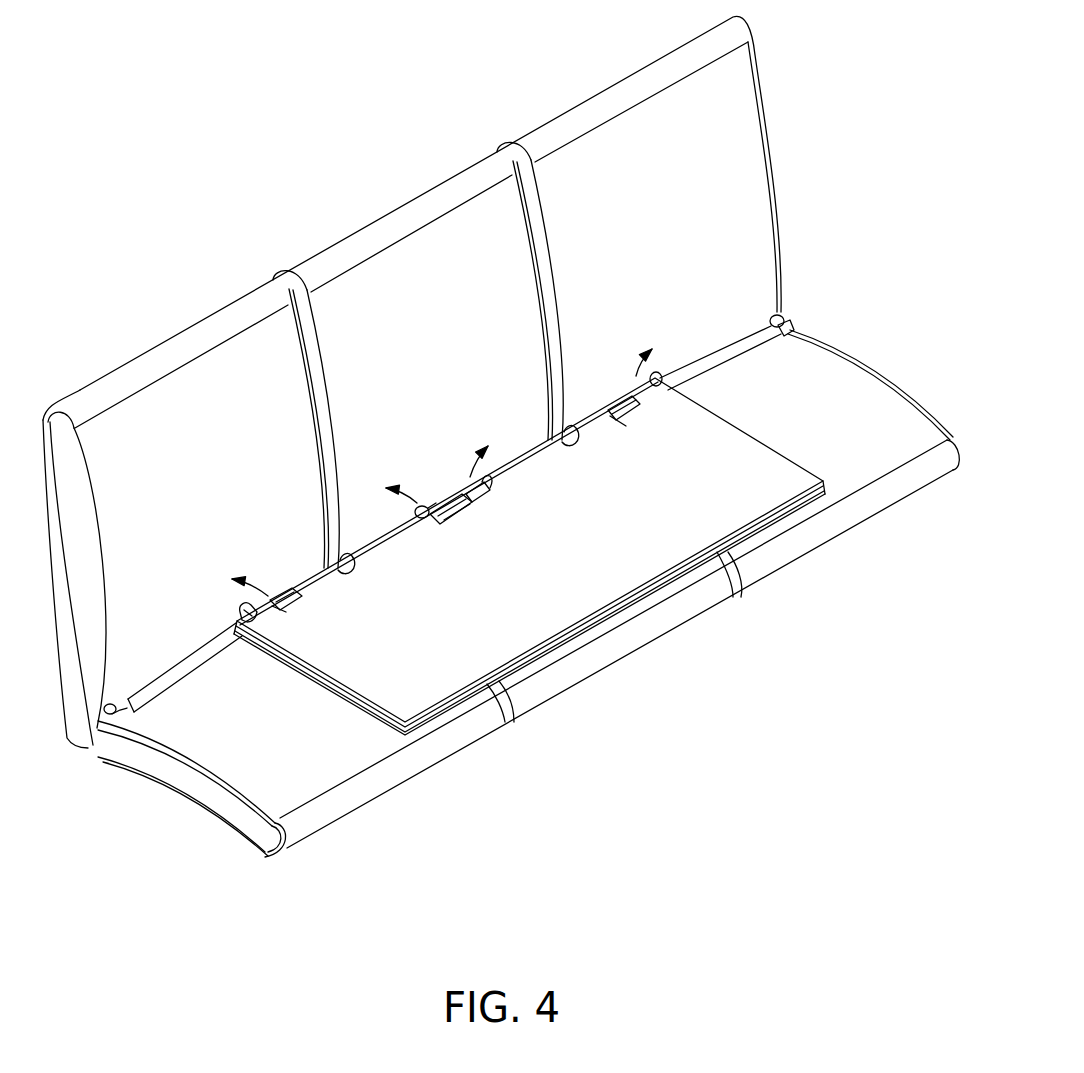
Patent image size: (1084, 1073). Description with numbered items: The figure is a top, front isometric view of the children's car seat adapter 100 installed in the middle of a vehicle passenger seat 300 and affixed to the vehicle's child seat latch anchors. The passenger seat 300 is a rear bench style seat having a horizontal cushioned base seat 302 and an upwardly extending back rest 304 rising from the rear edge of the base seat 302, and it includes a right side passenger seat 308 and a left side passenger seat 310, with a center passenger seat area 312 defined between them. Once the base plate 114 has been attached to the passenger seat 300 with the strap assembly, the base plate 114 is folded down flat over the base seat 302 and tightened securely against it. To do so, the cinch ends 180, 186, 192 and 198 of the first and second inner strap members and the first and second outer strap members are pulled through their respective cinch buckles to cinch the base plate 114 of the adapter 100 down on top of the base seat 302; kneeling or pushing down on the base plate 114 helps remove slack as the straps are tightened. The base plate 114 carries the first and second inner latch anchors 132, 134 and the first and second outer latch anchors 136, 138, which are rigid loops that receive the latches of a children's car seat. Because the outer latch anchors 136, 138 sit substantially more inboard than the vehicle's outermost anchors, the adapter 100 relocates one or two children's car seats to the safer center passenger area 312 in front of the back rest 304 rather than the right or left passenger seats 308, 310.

The car seat adapter 100 is at (489, 546).
The base plate 114 is at (610, 560).
The first inner latch anchor 132 is at (415, 517).
The second inner latch anchor 134 is at (489, 484).
The first outer latch anchor 136 is at (248, 612).
The second outer latch anchor 138 is at (661, 374).
The cinch end 180 is at (440, 523).
The cinch end 186 is at (483, 492).
The cinch end 192 is at (281, 608).
The cinch end 198 is at (636, 404).
The vehicle passenger seat 300 is at (501, 441).
The base seat 302 is at (390, 796).
The seat back 304 is at (412, 382).
The right side passenger seat 308 is at (230, 730).
The left side passenger seat 310 is at (847, 331).
The center passenger seat area 312 is at (378, 288).